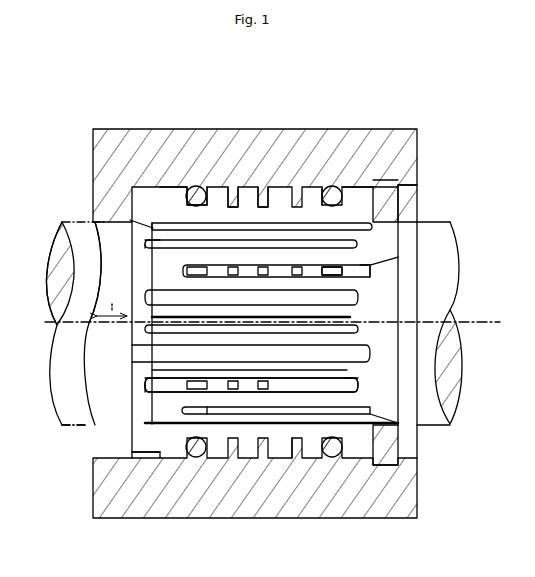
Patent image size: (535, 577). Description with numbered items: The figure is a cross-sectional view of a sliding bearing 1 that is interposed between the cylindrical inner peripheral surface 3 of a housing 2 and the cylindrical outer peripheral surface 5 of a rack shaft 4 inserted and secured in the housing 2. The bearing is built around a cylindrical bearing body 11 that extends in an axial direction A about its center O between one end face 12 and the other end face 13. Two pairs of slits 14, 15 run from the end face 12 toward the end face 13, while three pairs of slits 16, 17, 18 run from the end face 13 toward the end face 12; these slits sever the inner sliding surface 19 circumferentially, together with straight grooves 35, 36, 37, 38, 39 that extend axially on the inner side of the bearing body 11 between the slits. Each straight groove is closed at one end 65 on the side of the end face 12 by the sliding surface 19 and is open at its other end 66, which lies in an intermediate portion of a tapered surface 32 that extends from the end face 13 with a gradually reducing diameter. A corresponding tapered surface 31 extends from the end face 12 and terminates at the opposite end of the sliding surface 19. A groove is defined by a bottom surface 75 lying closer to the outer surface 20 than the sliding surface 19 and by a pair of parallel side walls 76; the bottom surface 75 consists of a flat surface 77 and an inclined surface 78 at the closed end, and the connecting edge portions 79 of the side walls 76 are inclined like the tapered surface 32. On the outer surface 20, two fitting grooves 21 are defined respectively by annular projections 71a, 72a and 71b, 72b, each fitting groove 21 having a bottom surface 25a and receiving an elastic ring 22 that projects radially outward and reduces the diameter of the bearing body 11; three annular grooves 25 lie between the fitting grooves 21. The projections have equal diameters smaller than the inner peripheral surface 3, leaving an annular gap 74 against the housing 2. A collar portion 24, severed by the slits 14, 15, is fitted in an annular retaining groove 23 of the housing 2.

The sliding bearing 1 is at (125, 376).
The housing 2 is at (259, 186).
The cylindrical inner peripheral surface 3 is at (140, 459).
The rack shaft 4 is at (455, 246).
The cylindrical outer peripheral surface 5 is at (68, 427).
The cylindrical bearing body 11 is at (143, 188).
The one end face 12 is at (440, 402).
The other end face 13 is at (125, 400).
The slit 14 is at (249, 268).
The slit 15 is at (272, 412).
The slit 16 is at (283, 268).
The slit 17 is at (371, 353).
The slit 18 is at (351, 318).
The cylindrical sliding surface 19 is at (348, 370).
The outer surface 20 is at (134, 459).
The fitting groove 21 is at (197, 457).
The elastic ring 22 is at (197, 186).
The annular retaining groove 23 is at (413, 186).
The collar portion 24 is at (387, 466).
The annular groove 25 is at (264, 187).
The bottom surface of the fitting groove 25a is at (192, 184).
The tapered surface 31 is at (398, 200).
The tapered surface 32 is at (134, 420).
The straight groove 35 is at (147, 382).
The straight groove 36 is at (148, 296).
The straight groove 37 is at (184, 420).
The straight groove 38 is at (150, 244).
The straight groove 39 is at (147, 328).
The one end 65 is at (358, 244).
The other end 66 is at (150, 248).
The annular projection 71a is at (396, 186).
The annular projection 71b is at (172, 186).
The annular projection 72a is at (309, 192).
The annular projection 72b is at (211, 192).
The annular gap 74 is at (350, 186).
The bottom surface 75 is at (201, 268).
The side wall 76 is at (231, 268).
The flat surface 77 is at (332, 268).
The inclined surface 78 is at (366, 268).
The connecting edge portion 79 is at (150, 237).
The axial direction A is at (112, 303).
The center O is at (476, 322).